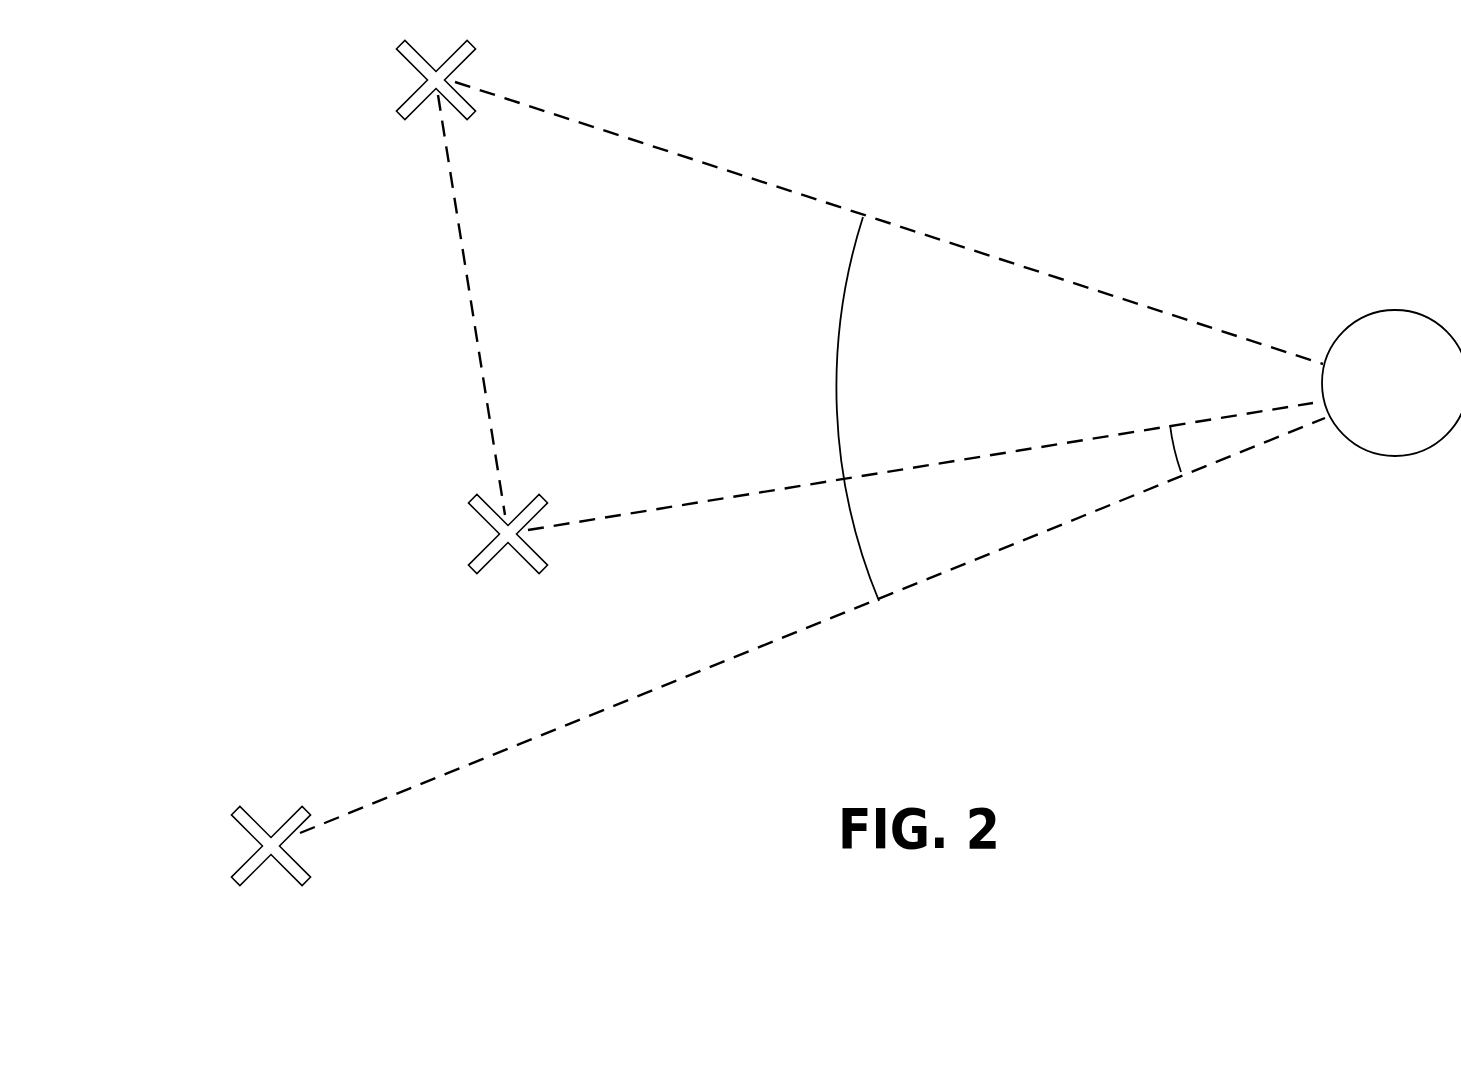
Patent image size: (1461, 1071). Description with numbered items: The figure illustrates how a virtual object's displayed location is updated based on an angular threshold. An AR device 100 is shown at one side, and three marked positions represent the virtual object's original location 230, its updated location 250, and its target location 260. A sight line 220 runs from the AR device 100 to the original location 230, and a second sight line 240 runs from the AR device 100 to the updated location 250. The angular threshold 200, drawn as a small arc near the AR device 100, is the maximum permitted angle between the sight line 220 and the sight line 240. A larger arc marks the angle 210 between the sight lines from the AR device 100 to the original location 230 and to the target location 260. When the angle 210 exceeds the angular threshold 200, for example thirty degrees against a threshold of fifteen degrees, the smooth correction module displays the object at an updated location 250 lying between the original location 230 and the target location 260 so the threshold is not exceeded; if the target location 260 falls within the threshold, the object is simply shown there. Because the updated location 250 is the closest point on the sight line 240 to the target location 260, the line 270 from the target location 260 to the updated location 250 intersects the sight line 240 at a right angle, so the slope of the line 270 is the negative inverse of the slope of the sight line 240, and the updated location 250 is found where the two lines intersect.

The AR device 100 is at (1391, 383).
The angular threshold 200 is at (1197, 461).
The angle 210 is at (828, 314).
The sight line 220 is at (1007, 569).
The original location 230 is at (272, 784).
The sight line 240 is at (688, 496).
The updated location 250 is at (478, 581).
The target location 260 is at (402, 126).
The line 270 is at (490, 201).